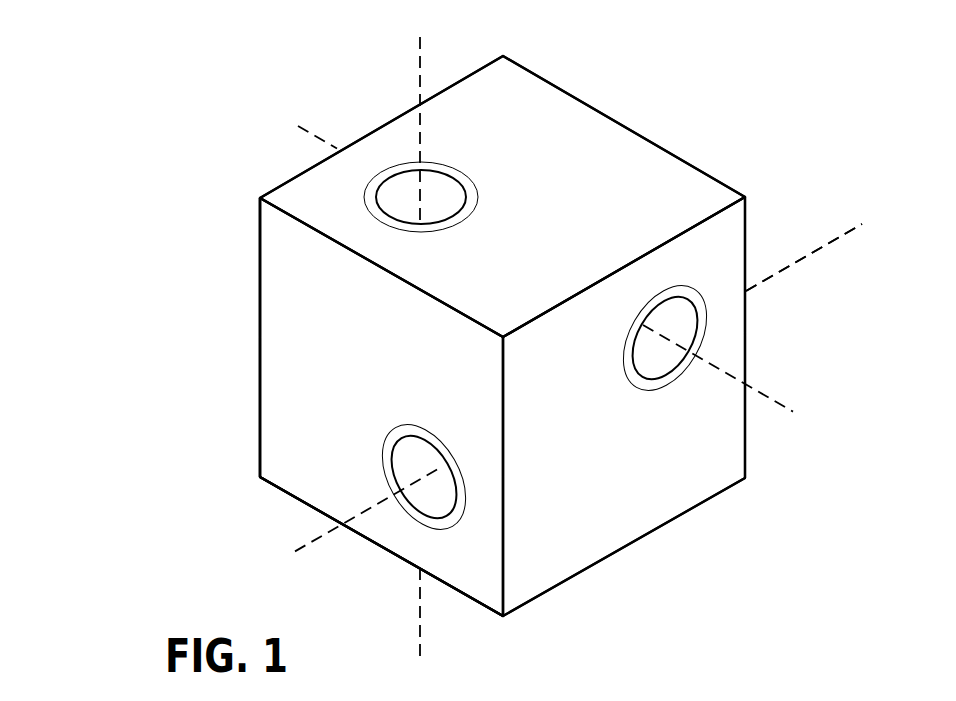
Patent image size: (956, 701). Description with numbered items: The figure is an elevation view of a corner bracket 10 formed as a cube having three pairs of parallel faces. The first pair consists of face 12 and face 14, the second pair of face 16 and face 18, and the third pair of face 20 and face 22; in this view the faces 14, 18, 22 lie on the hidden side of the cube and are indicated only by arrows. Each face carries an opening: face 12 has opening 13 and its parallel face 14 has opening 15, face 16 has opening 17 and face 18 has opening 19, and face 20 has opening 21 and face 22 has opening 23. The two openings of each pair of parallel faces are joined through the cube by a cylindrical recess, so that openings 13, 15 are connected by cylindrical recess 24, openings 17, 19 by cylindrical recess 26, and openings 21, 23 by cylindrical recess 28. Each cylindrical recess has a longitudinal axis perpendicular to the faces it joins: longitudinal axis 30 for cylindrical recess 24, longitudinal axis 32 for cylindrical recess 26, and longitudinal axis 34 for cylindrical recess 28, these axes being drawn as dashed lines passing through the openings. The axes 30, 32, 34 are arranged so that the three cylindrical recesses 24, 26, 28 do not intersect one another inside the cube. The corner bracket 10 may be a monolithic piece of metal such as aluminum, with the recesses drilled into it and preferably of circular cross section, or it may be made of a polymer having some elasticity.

The corner bracket 10 is at (182, 125).
The face 12 is at (293, 407).
The opening 13 is at (425, 515).
The face 14 is at (810, 223).
The opening 15 is at (810, 223).
The face 16 is at (657, 470).
The opening 17 is at (700, 328).
The face 18 is at (222, 243).
The opening 19 is at (222, 243).
The face 20 is at (554, 153).
The opening 21 is at (400, 172).
The face 22 is at (467, 633).
The opening 23 is at (467, 633).
The cylindrical recess 24 is at (428, 460).
The cylindrical recess 26 is at (663, 355).
The cylindrical recess 28 is at (408, 196).
The longitudinal axis 30 is at (313, 538).
The longitudinal axis 32 is at (760, 392).
The longitudinal axis 34 is at (415, 75).